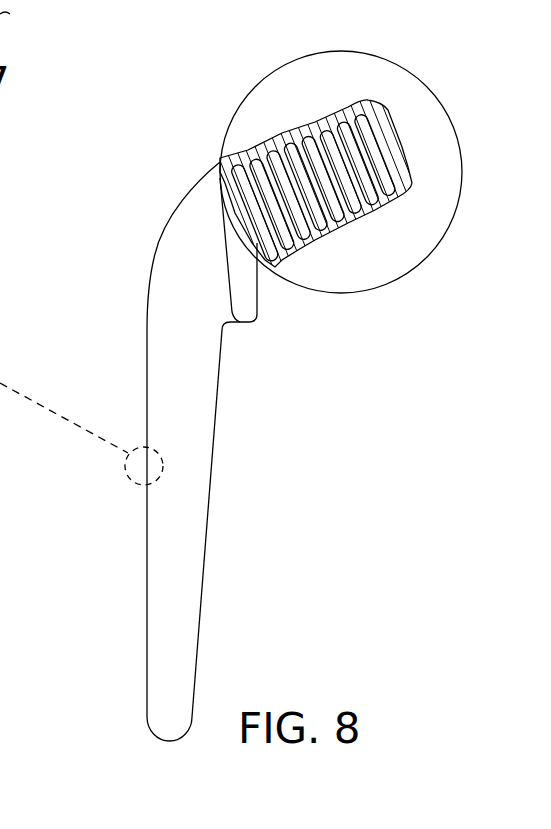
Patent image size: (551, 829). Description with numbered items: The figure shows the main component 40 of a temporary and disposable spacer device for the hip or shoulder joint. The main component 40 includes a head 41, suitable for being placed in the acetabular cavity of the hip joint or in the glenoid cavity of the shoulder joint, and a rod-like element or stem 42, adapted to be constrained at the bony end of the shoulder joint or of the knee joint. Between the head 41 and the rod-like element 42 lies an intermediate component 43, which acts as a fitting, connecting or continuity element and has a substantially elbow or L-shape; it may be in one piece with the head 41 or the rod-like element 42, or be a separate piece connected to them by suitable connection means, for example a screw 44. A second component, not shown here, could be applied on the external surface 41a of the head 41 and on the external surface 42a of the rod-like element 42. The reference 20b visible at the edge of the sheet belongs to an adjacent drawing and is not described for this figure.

The handle portion 20b is at (24, 16).
The main component 40 is at (120, 530).
The head 41 is at (397, 108).
The external surface of the head 41a is at (417, 264).
The rod-like element or stem 42 is at (170, 558).
The external surface of the rod-like element 42a is at (213, 462).
The intermediate component 43 is at (171, 262).
The screw 44 is at (328, 220).